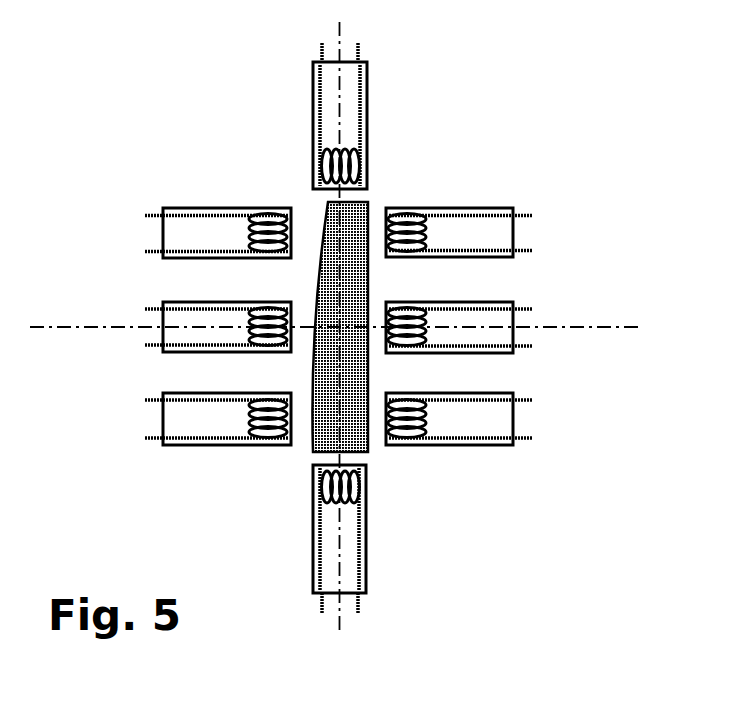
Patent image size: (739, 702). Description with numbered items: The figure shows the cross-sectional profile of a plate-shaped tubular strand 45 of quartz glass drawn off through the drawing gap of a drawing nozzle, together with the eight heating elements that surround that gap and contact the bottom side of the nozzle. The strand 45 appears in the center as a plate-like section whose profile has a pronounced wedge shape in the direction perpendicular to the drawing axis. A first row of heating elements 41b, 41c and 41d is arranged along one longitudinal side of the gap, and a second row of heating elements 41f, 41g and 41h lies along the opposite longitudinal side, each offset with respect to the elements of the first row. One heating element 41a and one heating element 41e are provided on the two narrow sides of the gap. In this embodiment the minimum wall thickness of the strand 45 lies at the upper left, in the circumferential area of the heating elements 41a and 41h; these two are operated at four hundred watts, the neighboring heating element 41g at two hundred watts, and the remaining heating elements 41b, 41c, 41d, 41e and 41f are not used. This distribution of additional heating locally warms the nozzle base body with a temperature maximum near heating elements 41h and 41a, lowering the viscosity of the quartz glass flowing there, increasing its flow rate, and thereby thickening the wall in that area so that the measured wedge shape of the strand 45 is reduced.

The heating element 41a is at (365, 62).
The heating element 41b is at (514, 210).
The heating element 41c is at (514, 303).
The heating element 41d is at (514, 413).
The heating element 41e is at (366, 560).
The heating element 41f is at (160, 404).
The heating element 41g is at (160, 308).
The heating element 41h is at (160, 215).
The plate-shaped tubular strand 45 is at (352, 233).